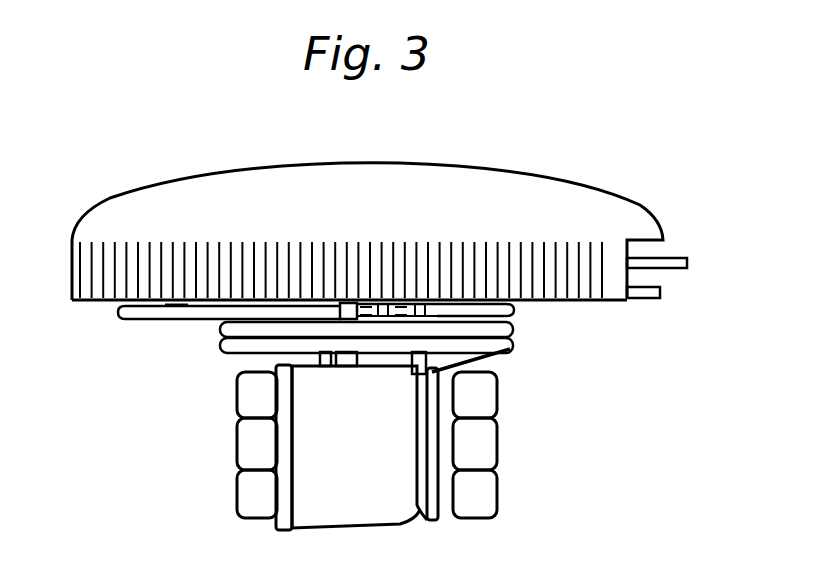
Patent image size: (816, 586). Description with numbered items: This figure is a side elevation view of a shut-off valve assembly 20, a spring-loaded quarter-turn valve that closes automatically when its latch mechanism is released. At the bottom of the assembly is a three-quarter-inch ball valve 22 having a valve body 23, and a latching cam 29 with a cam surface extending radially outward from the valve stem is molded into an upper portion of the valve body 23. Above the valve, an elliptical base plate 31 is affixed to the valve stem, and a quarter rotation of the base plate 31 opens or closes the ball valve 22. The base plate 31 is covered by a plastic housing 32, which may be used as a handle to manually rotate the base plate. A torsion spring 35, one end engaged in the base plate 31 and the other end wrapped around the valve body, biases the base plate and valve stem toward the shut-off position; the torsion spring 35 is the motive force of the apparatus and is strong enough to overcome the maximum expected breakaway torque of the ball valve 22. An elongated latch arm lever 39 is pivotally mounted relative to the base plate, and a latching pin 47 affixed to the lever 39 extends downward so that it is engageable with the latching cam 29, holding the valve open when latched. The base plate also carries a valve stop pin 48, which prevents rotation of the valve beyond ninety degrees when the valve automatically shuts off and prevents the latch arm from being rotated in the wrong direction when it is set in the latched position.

The shut-off valve assembly 20 is at (110, 166).
The plastic housing 32 is at (640, 202).
The latch arm lever 39 is at (688, 263).
The base plate 31 is at (660, 290).
The valve stop pin 48 is at (514, 313).
The torsion spring 35 is at (513, 340).
The latching cam 29 is at (337, 365).
The latching pin 47 is at (357, 366).
The ball valve 22 is at (216, 491).
The valve body 23 is at (497, 463).